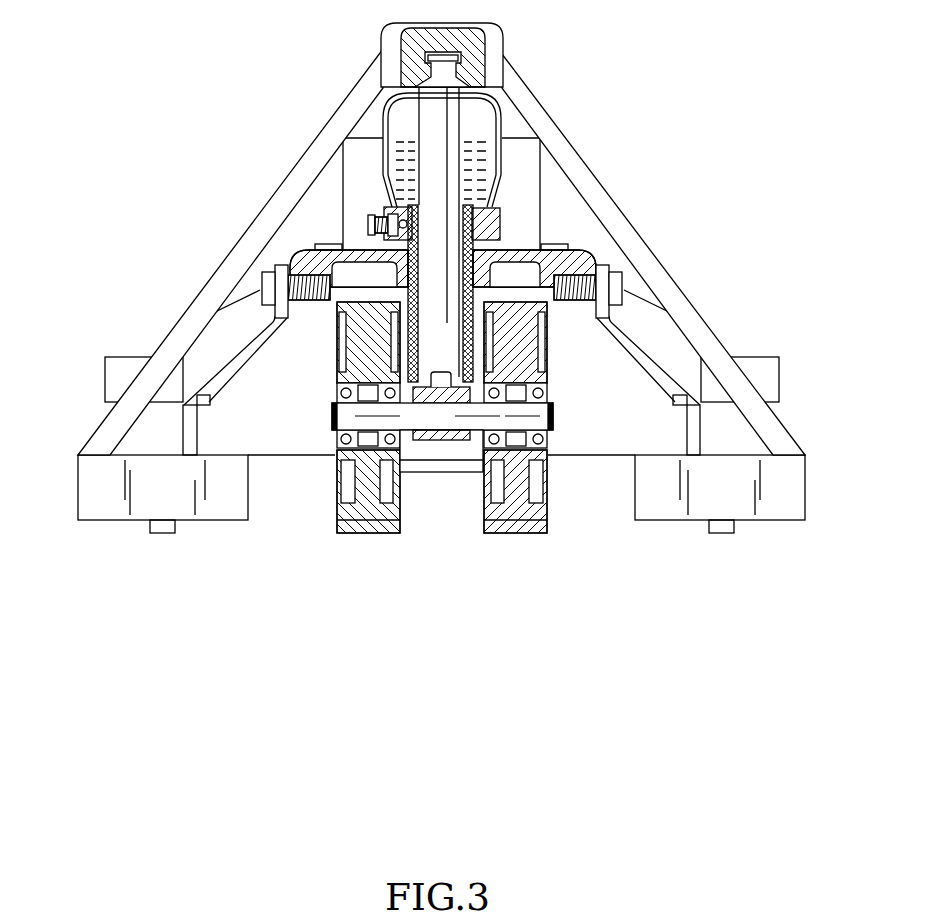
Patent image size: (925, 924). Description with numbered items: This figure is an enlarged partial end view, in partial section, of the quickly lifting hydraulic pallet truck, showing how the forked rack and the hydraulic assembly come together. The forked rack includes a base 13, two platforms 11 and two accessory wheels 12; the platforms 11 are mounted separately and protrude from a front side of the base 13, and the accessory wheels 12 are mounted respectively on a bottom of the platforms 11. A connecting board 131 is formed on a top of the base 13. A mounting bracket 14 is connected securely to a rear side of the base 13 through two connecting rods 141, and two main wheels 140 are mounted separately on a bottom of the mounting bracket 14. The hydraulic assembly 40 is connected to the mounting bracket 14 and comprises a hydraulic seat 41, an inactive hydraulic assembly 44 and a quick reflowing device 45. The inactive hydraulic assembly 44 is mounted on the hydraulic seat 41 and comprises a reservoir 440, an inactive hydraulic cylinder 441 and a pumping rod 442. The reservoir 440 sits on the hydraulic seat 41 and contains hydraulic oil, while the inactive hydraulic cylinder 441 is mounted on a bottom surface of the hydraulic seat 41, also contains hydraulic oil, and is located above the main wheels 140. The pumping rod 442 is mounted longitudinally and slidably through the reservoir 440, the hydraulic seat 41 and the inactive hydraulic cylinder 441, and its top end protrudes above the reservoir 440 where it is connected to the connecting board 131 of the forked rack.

The platform 11 is at (97, 485).
The accessory wheel 12 is at (163, 535).
The base 13 is at (187, 332).
The connecting board 131 is at (492, 48).
The mounting bracket 14 is at (538, 262).
The main wheel 140 is at (362, 532).
The connecting rod 141 is at (657, 368).
The hydraulic assembly 40 is at (362, 205).
The hydraulic seat 41 is at (498, 213).
The inactive hydraulic assembly 44 is at (372, 128).
The reservoir 440 is at (500, 127).
The inactive hydraulic cylinder 441 is at (472, 363).
The pumping rod 442 is at (435, 103).
The quick reflowing device 45 is at (370, 221).